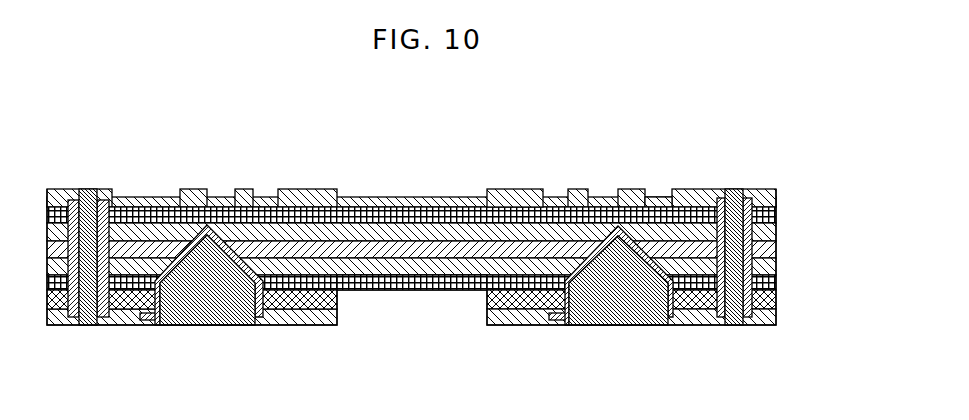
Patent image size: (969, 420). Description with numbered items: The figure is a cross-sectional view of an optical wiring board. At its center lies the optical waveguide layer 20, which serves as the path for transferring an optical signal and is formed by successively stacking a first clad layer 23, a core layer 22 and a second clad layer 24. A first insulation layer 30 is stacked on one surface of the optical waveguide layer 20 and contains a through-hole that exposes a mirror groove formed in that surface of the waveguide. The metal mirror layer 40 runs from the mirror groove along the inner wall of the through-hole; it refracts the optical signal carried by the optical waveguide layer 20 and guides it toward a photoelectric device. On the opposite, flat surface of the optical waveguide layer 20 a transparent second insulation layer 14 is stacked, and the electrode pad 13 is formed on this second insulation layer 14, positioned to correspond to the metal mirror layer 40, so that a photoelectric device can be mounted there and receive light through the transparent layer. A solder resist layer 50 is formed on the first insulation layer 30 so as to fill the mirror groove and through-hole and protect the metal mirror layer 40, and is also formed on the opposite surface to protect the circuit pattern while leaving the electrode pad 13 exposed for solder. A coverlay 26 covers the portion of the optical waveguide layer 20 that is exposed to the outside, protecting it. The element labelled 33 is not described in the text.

The electrode pad 13 is at (657, 190).
The second insulation layer 14 is at (777, 213).
The optical waveguide layer 20 is at (488, 248).
The core layer 22 is at (777, 248).
The first clad layer 23 is at (777, 230).
The second clad layer 24 is at (456, 279).
The coverlay 26 is at (420, 290).
The first insulation layer 30 is at (777, 285).
The via 33 is at (737, 189).
The metal mirror layer 40 is at (633, 265).
The solder resist layer 50 is at (514, 189).